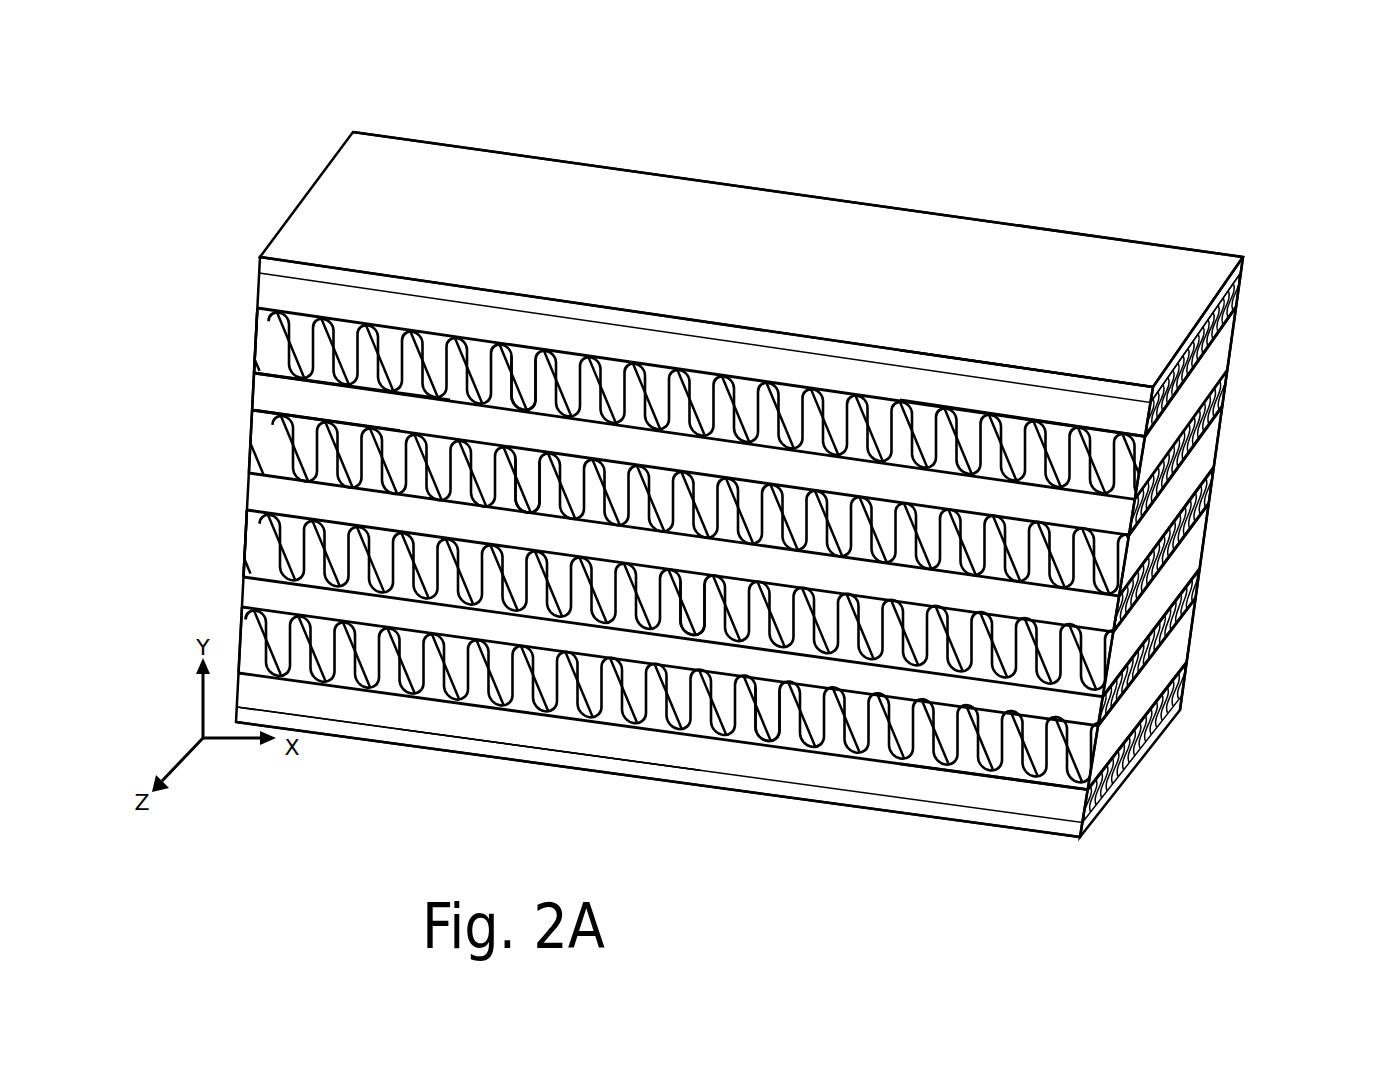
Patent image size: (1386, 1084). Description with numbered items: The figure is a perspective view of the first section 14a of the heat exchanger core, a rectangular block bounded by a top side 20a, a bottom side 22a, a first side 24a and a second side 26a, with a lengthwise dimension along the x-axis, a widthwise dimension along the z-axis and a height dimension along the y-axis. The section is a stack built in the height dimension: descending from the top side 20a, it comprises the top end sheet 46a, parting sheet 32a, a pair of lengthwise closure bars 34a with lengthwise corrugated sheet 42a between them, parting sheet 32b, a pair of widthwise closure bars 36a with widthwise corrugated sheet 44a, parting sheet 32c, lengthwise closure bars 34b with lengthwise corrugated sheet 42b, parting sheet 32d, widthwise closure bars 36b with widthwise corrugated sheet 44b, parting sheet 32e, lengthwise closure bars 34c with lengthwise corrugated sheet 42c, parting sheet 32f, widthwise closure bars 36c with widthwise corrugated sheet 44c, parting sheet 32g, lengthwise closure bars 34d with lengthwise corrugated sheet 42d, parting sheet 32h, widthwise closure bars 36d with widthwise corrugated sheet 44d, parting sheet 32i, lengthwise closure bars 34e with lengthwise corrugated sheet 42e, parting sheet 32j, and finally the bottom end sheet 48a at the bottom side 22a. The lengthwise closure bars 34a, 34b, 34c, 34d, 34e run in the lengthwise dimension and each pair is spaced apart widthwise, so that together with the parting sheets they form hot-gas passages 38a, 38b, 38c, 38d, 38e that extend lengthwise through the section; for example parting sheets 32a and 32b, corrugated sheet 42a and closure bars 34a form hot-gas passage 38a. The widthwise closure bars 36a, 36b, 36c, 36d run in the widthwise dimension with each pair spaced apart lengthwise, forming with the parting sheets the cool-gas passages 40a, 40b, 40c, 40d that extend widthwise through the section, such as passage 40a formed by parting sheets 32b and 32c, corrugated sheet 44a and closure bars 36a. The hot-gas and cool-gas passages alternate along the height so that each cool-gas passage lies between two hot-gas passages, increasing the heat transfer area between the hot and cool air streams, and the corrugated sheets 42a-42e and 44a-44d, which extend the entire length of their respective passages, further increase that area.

The first section 14a is at (810, 108).
The top side 20a is at (905, 205).
The bottom side 22a is at (770, 800).
The first side 24a is at (1210, 427).
The second side 26a is at (297, 413).
The parting sheet 32a is at (1080, 390).
The parting sheet 32b is at (1042, 417).
The parting sheet 32c is at (320, 386).
The parting sheet 32d is at (248, 420).
The parting sheet 32e is at (1125, 562).
The parting sheet 32f is at (1163, 625).
The parting sheet 32g is at (257, 542).
The parting sheet 32h is at (1085, 710).
The parting sheet 32i is at (975, 763).
The parting sheet 32j is at (555, 745).
The lengthwise closure bars 34a is at (397, 307).
The lengthwise closure bars 34b is at (813, 465).
The lengthwise closure bars 34c is at (267, 488).
The lengthwise closure bars 34d is at (1197, 582).
The lengthwise closure bars 34e is at (1182, 690).
The widthwise closure bars 36a is at (268, 333).
The widthwise closure bars 36b is at (260, 447).
The widthwise closure bars 36c is at (262, 545).
The widthwise closure bars 36d is at (253, 635).
The hot-gas passage 38a is at (1187, 340).
The hot-gas passage 38b is at (1223, 392).
The hot-gas passage 38c is at (1212, 500).
The hot-gas passage 38d is at (1150, 668).
The hot-gas passage 38e is at (1113, 793).
The cool-gas passage 40a is at (722, 387).
The cool-gas passage 40b is at (655, 468).
The cool-gas passage 40c is at (558, 580).
The cool-gas passage 40d is at (950, 768).
The lengthwise corrugated sheet 42a is at (1225, 285).
The lengthwise corrugated sheet 42b is at (1160, 450).
The lengthwise corrugated sheet 42c is at (1133, 528).
The lengthwise corrugated sheet 42d is at (1110, 640).
The lengthwise corrugated sheet 42e is at (1128, 752).
The widthwise corrugated sheet 44a is at (533, 347).
The widthwise corrugated sheet 44b is at (510, 462).
The widthwise corrugated sheet 44c is at (680, 580).
The widthwise corrugated sheet 44d is at (765, 690).
The top end sheet 46a is at (360, 160).
The bottom end sheet 48a is at (385, 730).